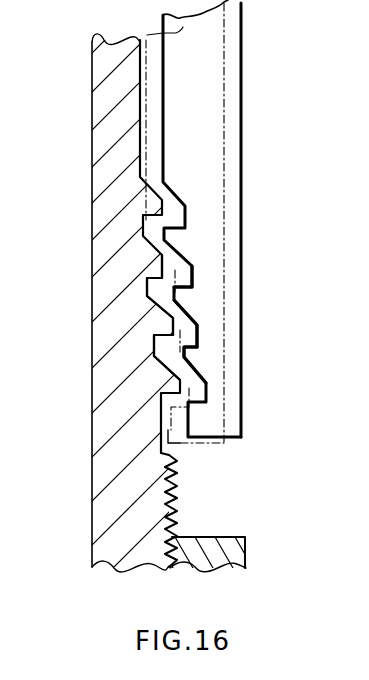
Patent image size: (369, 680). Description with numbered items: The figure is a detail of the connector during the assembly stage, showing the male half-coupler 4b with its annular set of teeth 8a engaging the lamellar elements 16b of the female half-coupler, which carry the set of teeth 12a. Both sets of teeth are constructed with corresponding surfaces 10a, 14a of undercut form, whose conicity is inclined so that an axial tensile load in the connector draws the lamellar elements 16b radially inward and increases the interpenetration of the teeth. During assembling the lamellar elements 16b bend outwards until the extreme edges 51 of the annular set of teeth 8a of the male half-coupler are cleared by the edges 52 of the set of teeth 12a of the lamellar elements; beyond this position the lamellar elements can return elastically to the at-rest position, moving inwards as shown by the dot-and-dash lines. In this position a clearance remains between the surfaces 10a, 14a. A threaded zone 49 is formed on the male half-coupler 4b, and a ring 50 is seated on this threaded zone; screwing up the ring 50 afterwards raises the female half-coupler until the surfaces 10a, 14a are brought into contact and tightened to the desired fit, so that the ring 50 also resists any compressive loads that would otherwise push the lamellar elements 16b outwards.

The male half-coupler 4b is at (96, 537).
The lamellar elements 16b is at (192, 128).
The extreme edges 51 is at (143, 279).
The edges 52 is at (190, 297).
The surfaces 14a is at (193, 334).
The set of teeth 12a is at (197, 357).
The annular set of teeth 8a is at (163, 321).
The surfaces 10a is at (167, 364).
The threaded zone 49 is at (177, 500).
The ring 50 is at (246, 551).